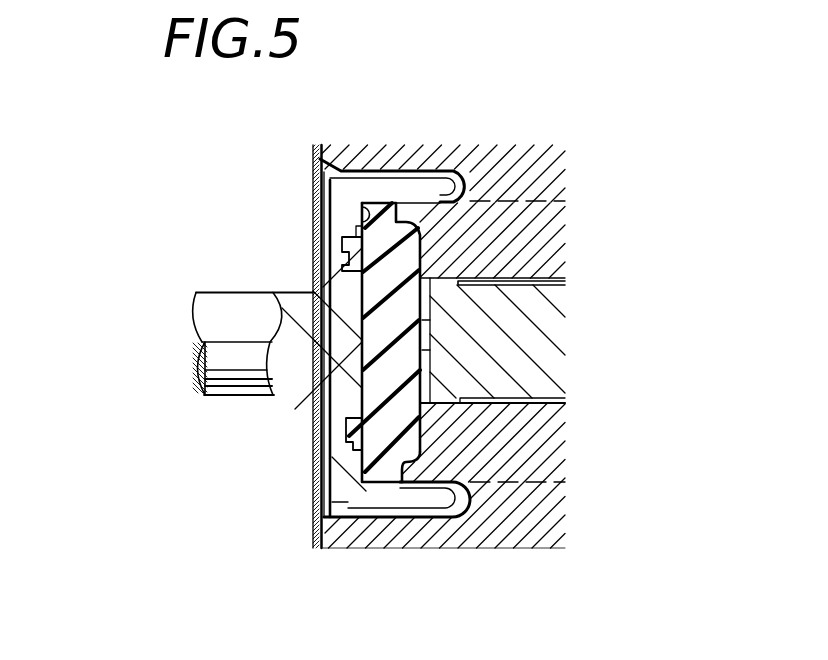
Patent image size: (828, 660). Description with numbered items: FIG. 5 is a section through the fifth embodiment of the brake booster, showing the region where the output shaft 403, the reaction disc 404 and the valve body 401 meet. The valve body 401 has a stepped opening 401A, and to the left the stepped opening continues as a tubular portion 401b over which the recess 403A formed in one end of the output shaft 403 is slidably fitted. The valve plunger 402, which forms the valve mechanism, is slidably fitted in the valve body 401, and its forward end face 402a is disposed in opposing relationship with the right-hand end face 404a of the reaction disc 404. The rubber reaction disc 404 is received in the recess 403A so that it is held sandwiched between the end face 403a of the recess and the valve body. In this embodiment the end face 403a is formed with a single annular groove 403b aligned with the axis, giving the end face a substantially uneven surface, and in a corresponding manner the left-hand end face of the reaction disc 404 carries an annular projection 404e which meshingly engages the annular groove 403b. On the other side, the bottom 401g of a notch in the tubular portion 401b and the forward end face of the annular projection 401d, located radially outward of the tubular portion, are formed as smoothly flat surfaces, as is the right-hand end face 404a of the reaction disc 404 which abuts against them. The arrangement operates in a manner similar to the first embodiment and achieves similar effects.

The valve body 401 is at (528, 456).
The stepped opening 401A is at (334, 338).
The tubular portion 401b is at (433, 470).
The annular projection 401d is at (405, 215).
The bottom of notch 401g is at (366, 205).
The valve plunger 402 is at (533, 324).
The forward end face 402a is at (340, 340).
The output shaft 403 is at (197, 293).
The recess 403A is at (386, 479).
The end face 403a is at (358, 210).
The annular groove 403b is at (344, 239).
The reaction disc 404 is at (348, 397).
The right-hand end face 404a is at (478, 278).
The annular projection 404e is at (342, 270).